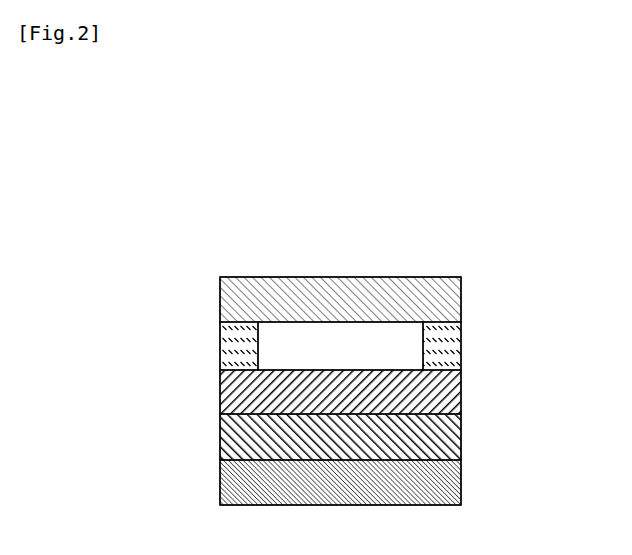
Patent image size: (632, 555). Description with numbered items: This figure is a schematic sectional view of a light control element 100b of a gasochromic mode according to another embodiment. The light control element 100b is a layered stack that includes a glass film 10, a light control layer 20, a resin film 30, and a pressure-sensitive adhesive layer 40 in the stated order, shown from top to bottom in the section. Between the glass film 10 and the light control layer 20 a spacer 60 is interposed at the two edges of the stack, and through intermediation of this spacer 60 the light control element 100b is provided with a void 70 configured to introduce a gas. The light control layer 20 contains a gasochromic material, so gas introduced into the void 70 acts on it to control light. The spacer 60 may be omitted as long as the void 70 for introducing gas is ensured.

The light control element 100b is at (497, 157).
The glass film 10 is at (462, 302).
The light control layer 20 is at (462, 389).
The resin film 30 is at (462, 432).
The pressure-sensitive adhesive layer 40 is at (462, 478).
The spacer 60 is at (462, 346).
The void 70 is at (340, 346).